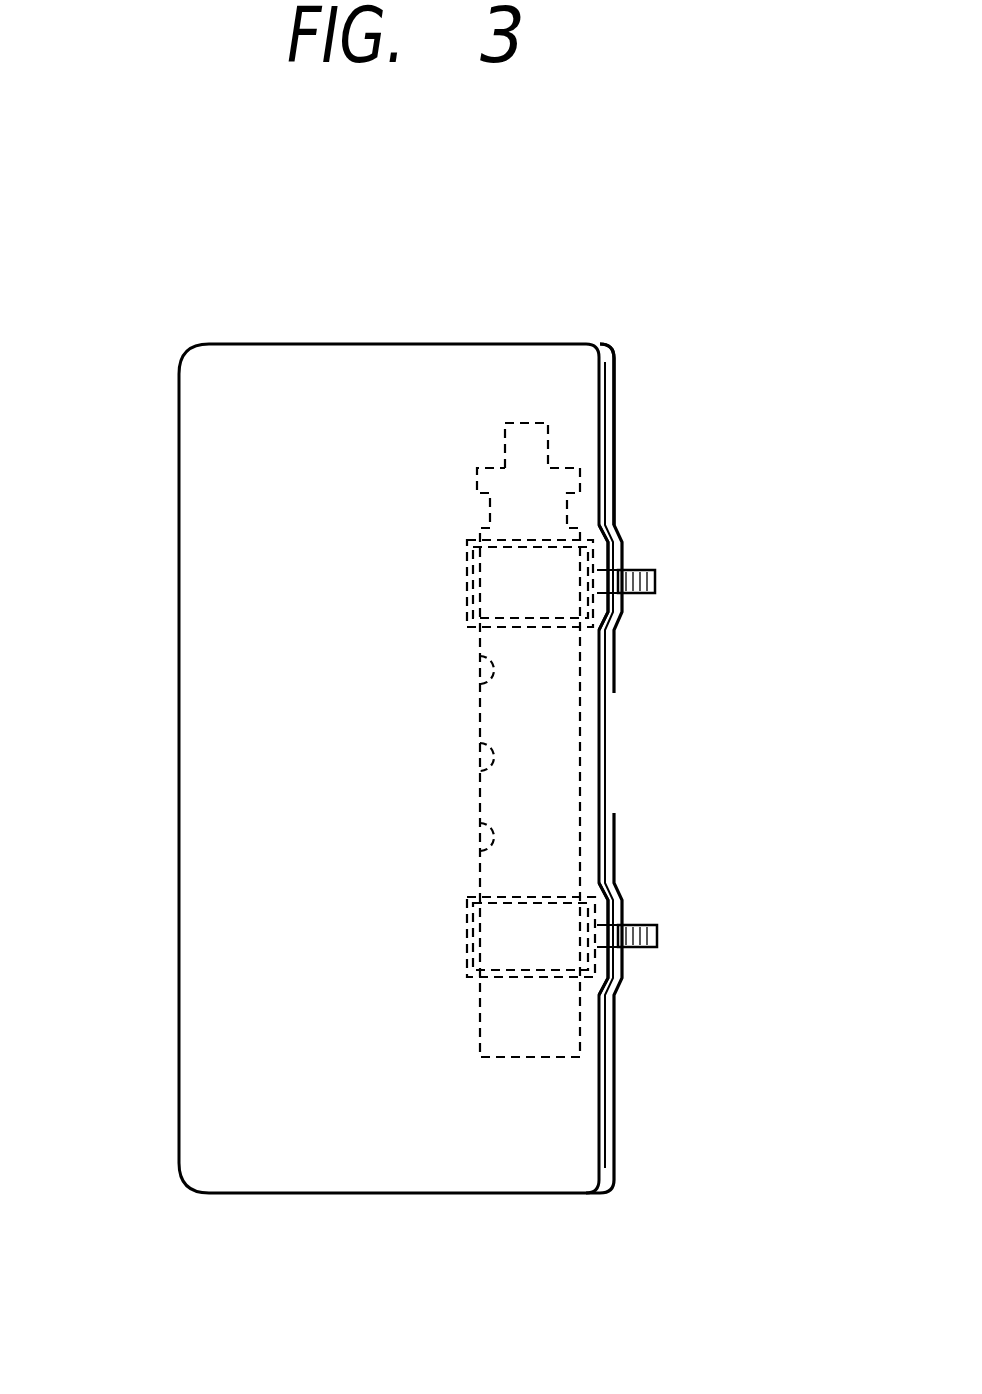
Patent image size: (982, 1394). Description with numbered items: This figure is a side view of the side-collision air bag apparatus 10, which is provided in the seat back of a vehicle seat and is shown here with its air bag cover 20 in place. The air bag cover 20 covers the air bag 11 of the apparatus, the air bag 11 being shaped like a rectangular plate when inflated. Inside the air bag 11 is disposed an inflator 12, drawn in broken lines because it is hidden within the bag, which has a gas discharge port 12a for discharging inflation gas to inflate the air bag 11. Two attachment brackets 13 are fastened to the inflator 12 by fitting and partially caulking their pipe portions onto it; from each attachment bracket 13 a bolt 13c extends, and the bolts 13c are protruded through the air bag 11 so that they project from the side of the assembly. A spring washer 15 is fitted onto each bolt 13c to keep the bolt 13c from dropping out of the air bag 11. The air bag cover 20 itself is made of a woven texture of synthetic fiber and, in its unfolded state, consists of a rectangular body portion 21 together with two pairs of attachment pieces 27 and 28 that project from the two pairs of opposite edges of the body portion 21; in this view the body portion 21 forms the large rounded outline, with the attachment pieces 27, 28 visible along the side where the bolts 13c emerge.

The side-collision air bag apparatus 10 is at (660, 300).
The air bag 11 is at (578, 1178).
The inflator 12 is at (480, 800).
The gas discharge port 12a is at (478, 670).
The attachment bracket 13 is at (452, 578).
The bolt 13c is at (655, 585).
The spring washer 15 is at (630, 560).
The air bag cover 20 is at (216, 328).
The body portion 21 is at (185, 480).
The attachment piece 27 is at (599, 730).
The attachment piece 28 is at (615, 437).